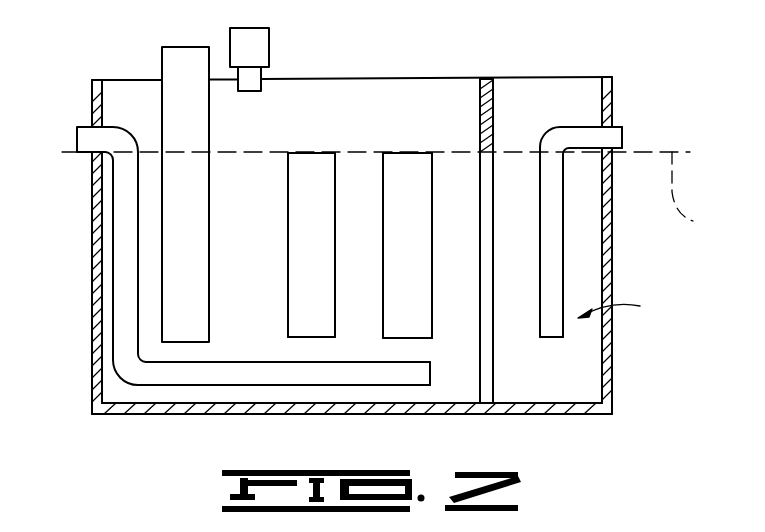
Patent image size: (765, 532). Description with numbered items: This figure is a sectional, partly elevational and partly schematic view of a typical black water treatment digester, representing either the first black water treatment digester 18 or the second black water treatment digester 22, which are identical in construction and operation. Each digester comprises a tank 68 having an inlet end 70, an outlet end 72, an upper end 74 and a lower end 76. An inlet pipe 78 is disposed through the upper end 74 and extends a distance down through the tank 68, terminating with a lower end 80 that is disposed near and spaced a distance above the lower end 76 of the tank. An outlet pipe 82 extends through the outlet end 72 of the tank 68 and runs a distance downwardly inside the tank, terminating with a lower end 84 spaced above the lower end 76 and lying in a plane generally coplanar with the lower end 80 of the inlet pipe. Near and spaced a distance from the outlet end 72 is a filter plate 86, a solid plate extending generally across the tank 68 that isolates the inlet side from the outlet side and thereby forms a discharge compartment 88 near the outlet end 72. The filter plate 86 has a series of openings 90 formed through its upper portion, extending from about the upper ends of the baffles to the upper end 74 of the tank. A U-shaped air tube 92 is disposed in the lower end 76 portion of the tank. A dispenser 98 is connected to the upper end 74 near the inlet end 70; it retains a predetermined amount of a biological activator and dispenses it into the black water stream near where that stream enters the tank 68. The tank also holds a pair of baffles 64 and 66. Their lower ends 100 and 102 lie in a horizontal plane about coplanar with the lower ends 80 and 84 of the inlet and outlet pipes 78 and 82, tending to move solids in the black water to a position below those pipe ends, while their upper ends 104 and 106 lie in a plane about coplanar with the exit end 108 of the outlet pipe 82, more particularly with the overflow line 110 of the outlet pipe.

The first black water treatment digester 18 is at (421, 246).
The second black water treatment digester 22 is at (389, 246).
The baffle 64 is at (288, 190).
The baffle 66 is at (383, 180).
The tank 68 is at (612, 283).
The inlet end 70 is at (92, 311).
The outlet end 72 is at (612, 390).
The upper end 74 is at (345, 78).
The lower end 76 is at (300, 415).
The inlet pipe 78 is at (162, 60).
The lower end of inlet pipe 80 is at (180, 342).
The outlet pipe 82 is at (565, 236).
The lower end of outlet pipe 84 is at (553, 337).
The filter plate 86 is at (488, 374).
The discharge compartment 88 is at (623, 310).
The openings 90 is at (492, 74).
The U-shaped air tube 92 is at (216, 388).
The dispenser 98 is at (262, 43).
The lower end of baffle 100 is at (312, 342).
The lower end of baffle 102 is at (413, 340).
The upper end of baffle 104 is at (313, 152).
The upper end of baffle 106 is at (415, 152).
The exit end 108 is at (622, 135).
The overflow line 110 is at (704, 195).